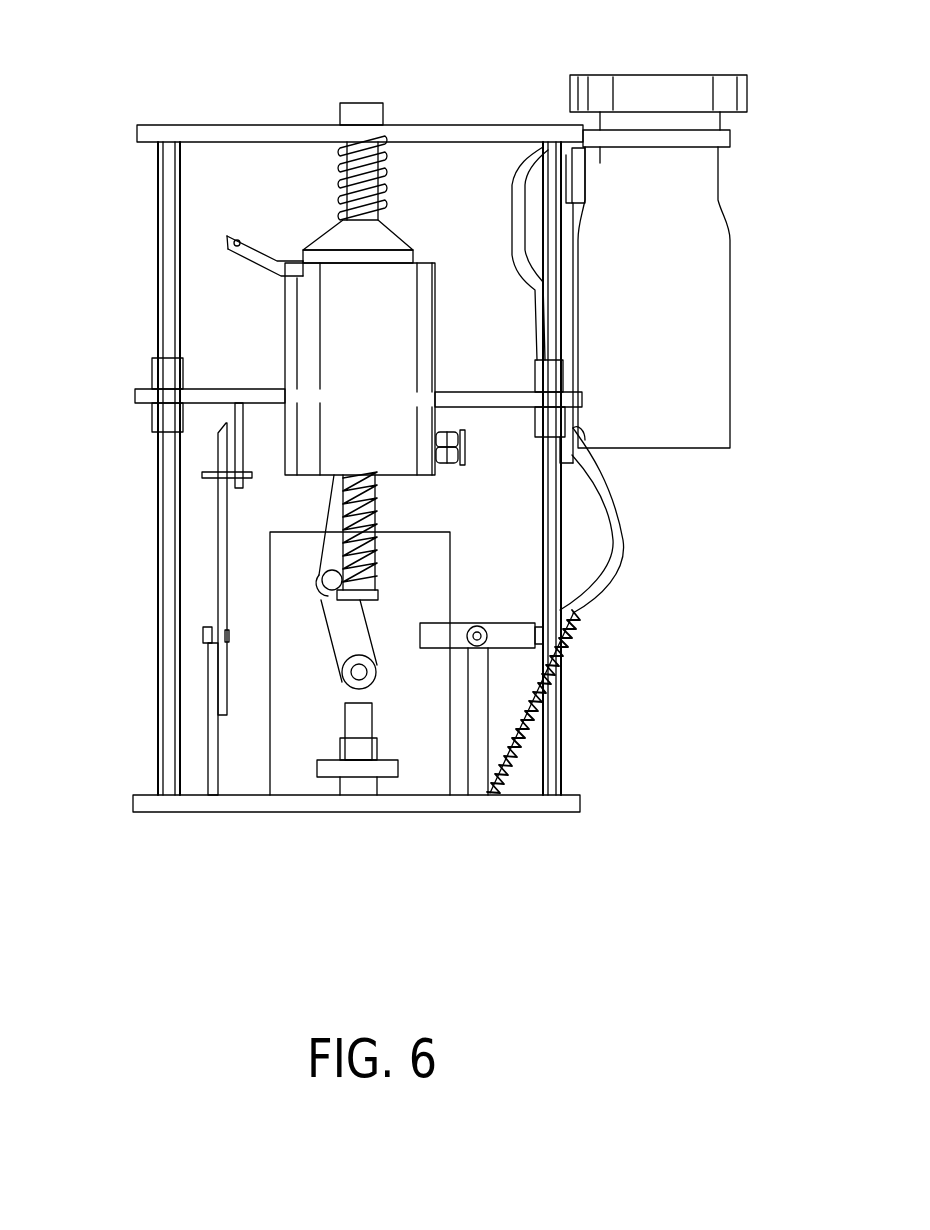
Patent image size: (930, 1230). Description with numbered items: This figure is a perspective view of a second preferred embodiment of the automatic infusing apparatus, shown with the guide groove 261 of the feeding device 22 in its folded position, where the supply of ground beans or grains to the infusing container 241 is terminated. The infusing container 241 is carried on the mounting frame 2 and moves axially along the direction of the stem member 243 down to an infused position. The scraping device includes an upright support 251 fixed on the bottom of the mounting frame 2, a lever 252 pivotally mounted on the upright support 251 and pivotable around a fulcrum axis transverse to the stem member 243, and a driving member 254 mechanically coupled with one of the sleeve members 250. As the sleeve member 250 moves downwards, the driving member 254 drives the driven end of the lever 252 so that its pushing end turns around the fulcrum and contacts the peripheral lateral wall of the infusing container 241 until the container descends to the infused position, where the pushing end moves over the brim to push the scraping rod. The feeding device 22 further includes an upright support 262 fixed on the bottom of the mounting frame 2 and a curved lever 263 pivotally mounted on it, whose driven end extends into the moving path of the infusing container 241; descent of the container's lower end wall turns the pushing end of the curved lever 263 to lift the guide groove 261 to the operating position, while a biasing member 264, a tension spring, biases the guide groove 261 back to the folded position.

The mounting frame 2 is at (426, 92).
The feeding device 22 is at (567, 120).
The infusing container 241 is at (287, 322).
The stem member 243 is at (375, 518).
The sleeve member 250 is at (152, 370).
The upright support 251 is at (208, 685).
The lever 252 is at (215, 560).
The driving member 254 is at (210, 478).
The guide groove 261 is at (530, 290).
The upright support 262 is at (477, 795).
The curved lever 263 is at (620, 548).
The biasing member 264 is at (560, 660).